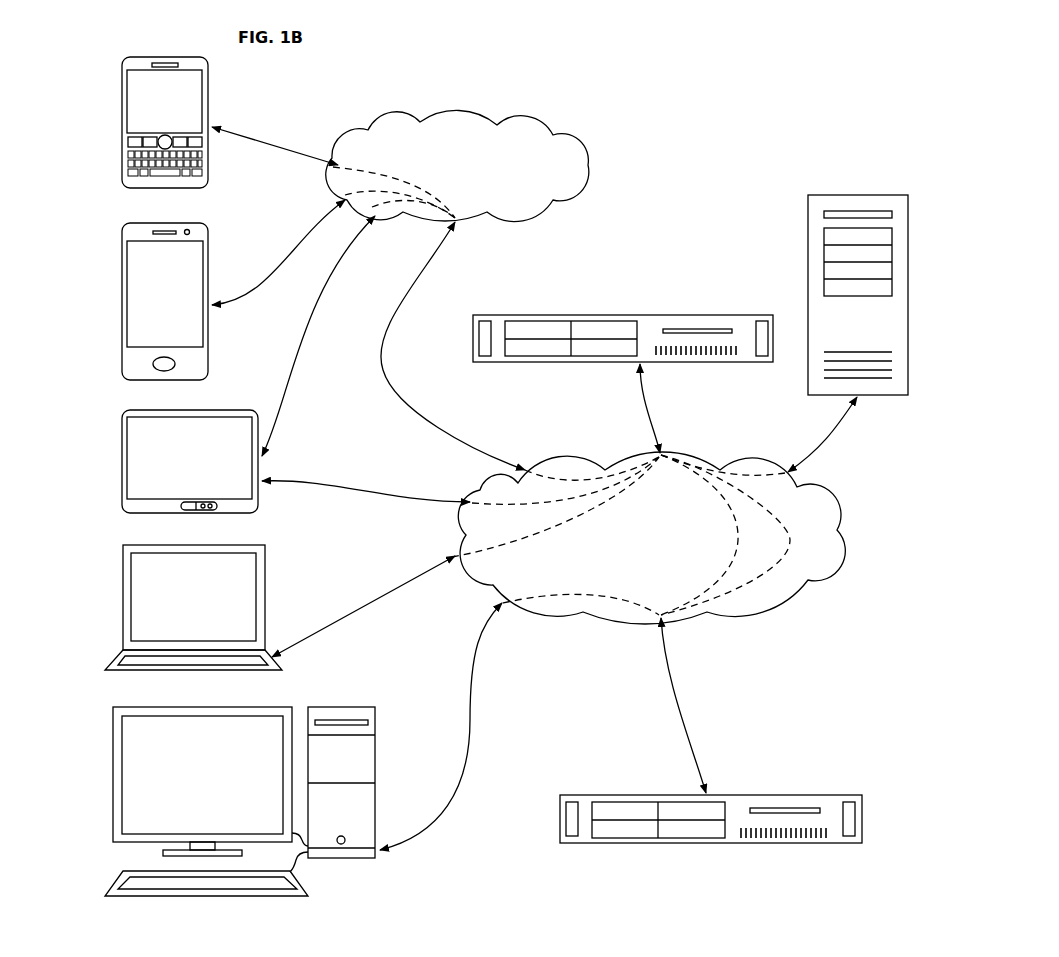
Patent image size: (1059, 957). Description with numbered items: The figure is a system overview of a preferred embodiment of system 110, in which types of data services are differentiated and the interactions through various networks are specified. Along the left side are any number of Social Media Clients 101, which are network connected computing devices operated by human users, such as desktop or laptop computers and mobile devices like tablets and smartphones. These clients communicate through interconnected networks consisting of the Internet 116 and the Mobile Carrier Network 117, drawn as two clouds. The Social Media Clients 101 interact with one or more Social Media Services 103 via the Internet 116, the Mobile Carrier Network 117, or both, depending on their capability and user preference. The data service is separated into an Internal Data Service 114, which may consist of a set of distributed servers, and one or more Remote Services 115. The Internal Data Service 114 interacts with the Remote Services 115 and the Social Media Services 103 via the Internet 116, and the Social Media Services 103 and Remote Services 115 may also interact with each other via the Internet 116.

The Social Media Clients 101 is at (122, 122).
The Social Media Service 103 is at (618, 315).
The system 110 is at (709, 93).
The Internal Data Service 114 is at (726, 843).
The Remote Service 115 is at (806, 237).
The Internet 116 is at (786, 600).
The Mobile Carrier Network 117 is at (540, 122).